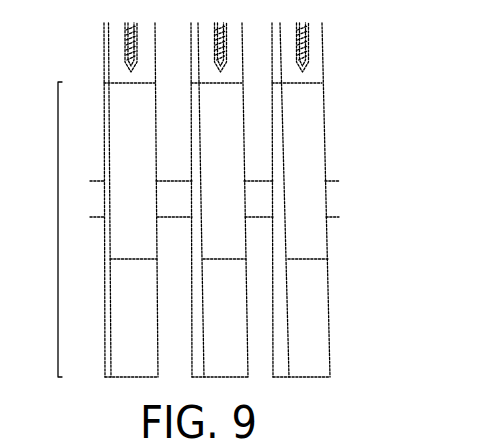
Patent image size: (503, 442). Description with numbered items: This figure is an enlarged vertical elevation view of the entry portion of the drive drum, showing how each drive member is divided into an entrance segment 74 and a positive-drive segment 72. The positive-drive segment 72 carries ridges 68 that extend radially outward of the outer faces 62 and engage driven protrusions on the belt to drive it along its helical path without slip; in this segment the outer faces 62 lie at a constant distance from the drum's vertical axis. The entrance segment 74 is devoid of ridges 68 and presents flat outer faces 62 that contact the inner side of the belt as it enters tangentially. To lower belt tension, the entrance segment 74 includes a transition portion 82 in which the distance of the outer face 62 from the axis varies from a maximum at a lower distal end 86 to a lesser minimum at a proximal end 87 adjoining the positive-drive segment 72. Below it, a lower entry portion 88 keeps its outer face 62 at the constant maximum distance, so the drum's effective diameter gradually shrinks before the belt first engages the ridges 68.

The positive-drive segment 72 is at (104, 44).
The ridge 68 is at (303, 37).
The outer face 62 is at (318, 61).
The proximal end 87 is at (322, 82).
The transition portion 82 is at (315, 140).
The entrance segment 74 is at (58, 229).
The lower distal end 86 is at (314, 259).
The lower entry portion 88 is at (321, 347).